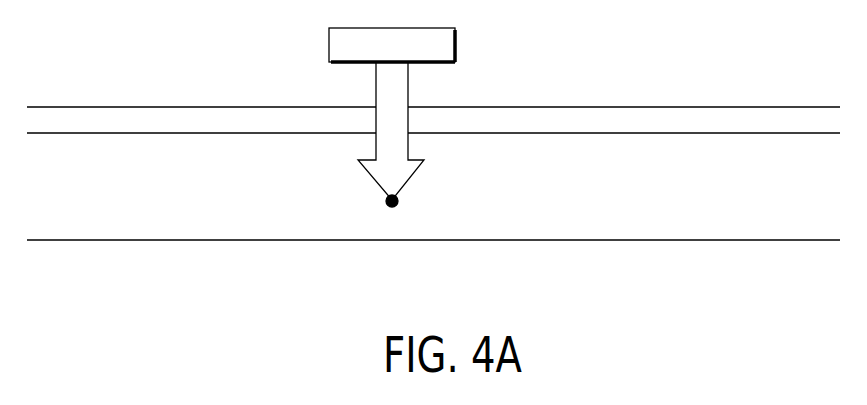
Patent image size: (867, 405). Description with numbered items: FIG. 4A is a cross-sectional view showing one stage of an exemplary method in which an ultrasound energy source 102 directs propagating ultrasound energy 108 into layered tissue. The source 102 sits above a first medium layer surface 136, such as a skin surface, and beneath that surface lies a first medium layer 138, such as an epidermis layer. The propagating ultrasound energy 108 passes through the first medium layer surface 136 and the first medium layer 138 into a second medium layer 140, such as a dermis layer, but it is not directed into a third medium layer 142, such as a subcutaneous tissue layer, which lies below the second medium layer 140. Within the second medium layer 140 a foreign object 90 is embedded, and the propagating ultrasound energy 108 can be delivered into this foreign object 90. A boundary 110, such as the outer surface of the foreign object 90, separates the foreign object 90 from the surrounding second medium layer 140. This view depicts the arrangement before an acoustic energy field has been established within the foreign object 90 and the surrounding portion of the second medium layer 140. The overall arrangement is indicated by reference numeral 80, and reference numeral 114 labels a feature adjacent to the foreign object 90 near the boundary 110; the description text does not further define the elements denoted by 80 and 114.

The system 80 is at (234, 269).
The foreign object 90 is at (384, 199).
The ultrasound energy source 102 is at (460, 42).
The propagating ultrasound energy 108 is at (375, 92).
The boundary 110 is at (399, 203).
The melt zone 114 is at (387, 206).
The first medium layer surface 136 is at (623, 108).
The first medium layer 138 is at (815, 118).
The second medium layer 140 is at (818, 203).
The third medium layer 142 is at (835, 270).